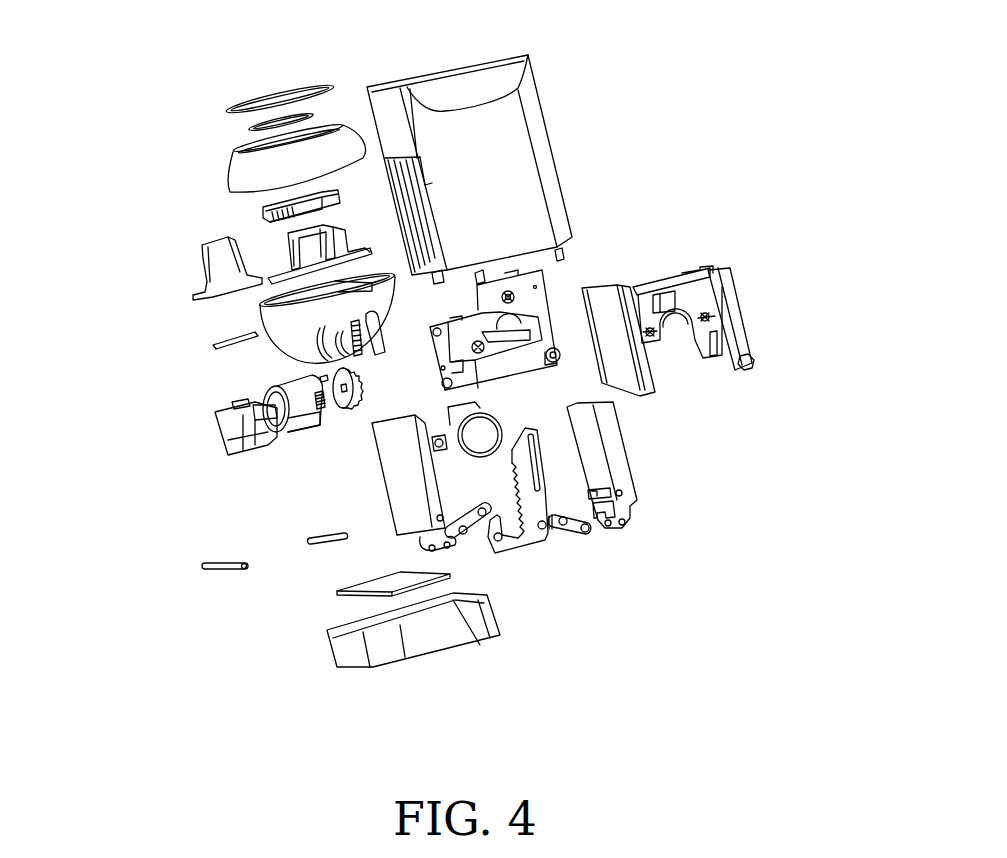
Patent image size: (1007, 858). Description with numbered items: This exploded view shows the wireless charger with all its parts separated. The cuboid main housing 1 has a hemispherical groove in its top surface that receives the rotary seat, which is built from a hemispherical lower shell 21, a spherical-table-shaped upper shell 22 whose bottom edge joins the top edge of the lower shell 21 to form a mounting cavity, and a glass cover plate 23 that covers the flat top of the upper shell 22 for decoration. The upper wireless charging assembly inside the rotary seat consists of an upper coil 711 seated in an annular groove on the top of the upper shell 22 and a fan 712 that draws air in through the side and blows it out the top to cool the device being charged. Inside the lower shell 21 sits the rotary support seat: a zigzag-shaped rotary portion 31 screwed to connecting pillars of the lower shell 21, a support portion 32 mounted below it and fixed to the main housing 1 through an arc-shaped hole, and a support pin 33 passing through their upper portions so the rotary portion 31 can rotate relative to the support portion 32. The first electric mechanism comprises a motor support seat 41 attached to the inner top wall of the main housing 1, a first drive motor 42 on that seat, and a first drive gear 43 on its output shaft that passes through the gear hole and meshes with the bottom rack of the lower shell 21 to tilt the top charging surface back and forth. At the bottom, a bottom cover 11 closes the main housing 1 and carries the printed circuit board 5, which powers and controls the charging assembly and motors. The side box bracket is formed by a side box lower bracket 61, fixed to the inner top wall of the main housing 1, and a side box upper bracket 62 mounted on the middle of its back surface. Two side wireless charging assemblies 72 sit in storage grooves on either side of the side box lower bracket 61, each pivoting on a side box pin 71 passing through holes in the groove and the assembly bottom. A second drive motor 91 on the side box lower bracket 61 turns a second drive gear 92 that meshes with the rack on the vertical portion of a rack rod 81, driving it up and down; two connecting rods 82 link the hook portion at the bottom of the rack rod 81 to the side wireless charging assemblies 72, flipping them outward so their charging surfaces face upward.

The main housing 1 is at (540, 101).
The cover plate 23 is at (242, 103).
The upper coil 711 is at (252, 128).
The upper shell 22 is at (287, 163).
The fan 712 is at (263, 203).
The rotary portion 31 is at (283, 243).
The support portion 32 is at (223, 265).
The lower shell 21 is at (300, 325).
The support pin 33 is at (215, 345).
The first drive gear 43 is at (337, 375).
The motor support seat 41 is at (232, 443).
The first drive motor 42 is at (310, 440).
The second drive motor 91 is at (477, 440).
The side wireless charging assembly 72 is at (615, 428).
The side box pin 71 is at (328, 540).
The printed circuit board 5 is at (360, 590).
The bottom cover 11 is at (392, 648).
The connecting rod 82 is at (475, 528).
The rack rod 81 is at (530, 540).
The second drive gear 92 is at (575, 478).
The side box upper bracket 62 is at (535, 287).
The side box lower bracket 61 is at (718, 293).